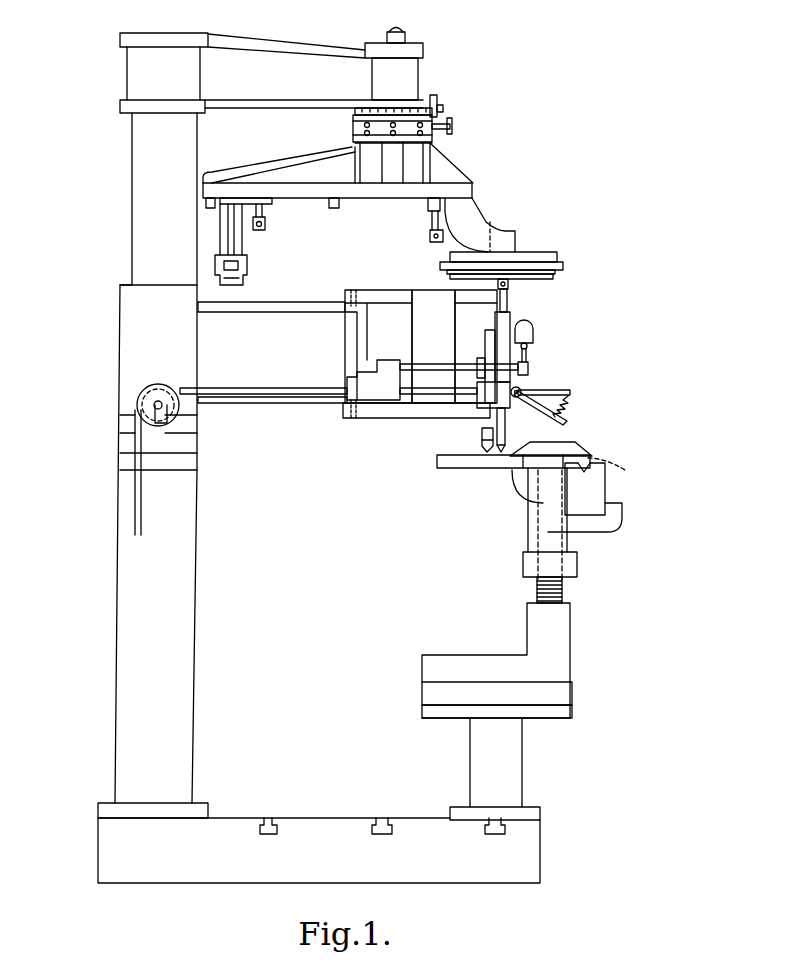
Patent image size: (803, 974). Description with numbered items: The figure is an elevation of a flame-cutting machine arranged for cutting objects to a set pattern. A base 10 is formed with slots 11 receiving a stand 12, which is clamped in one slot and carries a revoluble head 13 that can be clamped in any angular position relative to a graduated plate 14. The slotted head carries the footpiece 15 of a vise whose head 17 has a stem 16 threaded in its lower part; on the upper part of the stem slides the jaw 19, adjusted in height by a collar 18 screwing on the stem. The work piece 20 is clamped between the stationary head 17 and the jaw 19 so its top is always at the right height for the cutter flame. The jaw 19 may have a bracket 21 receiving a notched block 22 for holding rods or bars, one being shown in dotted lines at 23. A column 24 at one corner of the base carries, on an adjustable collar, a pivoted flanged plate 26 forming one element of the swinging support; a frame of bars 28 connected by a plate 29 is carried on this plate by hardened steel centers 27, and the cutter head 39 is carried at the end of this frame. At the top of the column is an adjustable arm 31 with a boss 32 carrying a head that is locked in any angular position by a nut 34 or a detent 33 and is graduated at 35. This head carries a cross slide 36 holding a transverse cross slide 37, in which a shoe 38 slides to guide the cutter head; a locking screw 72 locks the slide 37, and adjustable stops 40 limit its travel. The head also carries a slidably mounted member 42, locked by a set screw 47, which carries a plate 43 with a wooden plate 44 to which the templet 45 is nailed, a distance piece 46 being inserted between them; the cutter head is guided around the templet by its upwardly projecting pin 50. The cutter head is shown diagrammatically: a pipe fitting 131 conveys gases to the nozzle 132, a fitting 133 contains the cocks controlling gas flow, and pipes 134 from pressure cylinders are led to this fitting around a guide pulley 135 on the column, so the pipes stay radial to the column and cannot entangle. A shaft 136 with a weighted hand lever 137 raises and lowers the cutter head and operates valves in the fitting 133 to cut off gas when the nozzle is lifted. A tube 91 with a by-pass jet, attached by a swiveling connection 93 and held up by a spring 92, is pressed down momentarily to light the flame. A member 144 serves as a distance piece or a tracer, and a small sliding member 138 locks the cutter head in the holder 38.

The base 10 is at (232, 836).
The slots 11 is at (380, 830).
The stand 12 is at (505, 768).
The revoluble head 13 is at (558, 696).
The graduated plate 14 is at (560, 717).
The footpiece 15 is at (437, 670).
The stem 16 is at (565, 589).
The head 17 is at (576, 452).
The collar 18 is at (576, 566).
The jaw 19 is at (527, 488).
The work piece 20 is at (478, 470).
The bracket 21 is at (610, 522).
The notched block 22 is at (592, 494).
The rod or bar 23 is at (615, 469).
The column 24 is at (178, 733).
The flanged plate 26 is at (271, 323).
The centers 27 is at (350, 288).
The bars 28 is at (390, 300).
The plate 29 is at (454, 346).
The arm 31 is at (270, 70).
The boss 32 is at (408, 77).
The detent 33 is at (455, 127).
The nut 34 is at (406, 36).
The graduations 35 is at (355, 118).
The cross slide 36 is at (245, 180).
The transverse cross slide 37 is at (249, 266).
The shoe 38 is at (242, 281).
The cutter head 39 is at (536, 329).
The adjustable stops 40 is at (208, 206).
The slidably mounted member 42 is at (508, 233).
The plate 43 is at (546, 255).
The wooden plate 44 is at (562, 265).
The templet 45 is at (554, 278).
The distance piece 46 is at (556, 272).
The set screw 47 is at (431, 230).
The pin 50 is at (509, 284).
The locking screw 72 is at (267, 224).
The tube 91 is at (566, 424).
The spring 92 is at (571, 404).
The swiveling connection 93 is at (522, 392).
The pipe fitting 131 is at (425, 396).
The nozzle 132 is at (500, 453).
The fitting 133 is at (372, 378).
The pipes 134 is at (233, 387).
The guide pulley 135 is at (175, 418).
The shaft 136 is at (426, 364).
The weighted hand lever 137 is at (529, 366).
The sliding member 138 is at (229, 286).
The member 144 is at (484, 448).